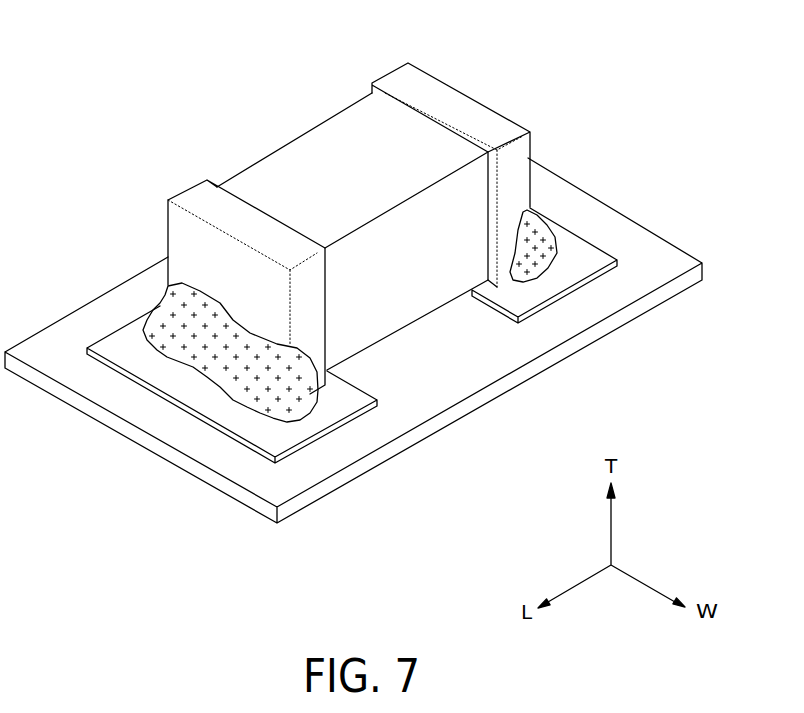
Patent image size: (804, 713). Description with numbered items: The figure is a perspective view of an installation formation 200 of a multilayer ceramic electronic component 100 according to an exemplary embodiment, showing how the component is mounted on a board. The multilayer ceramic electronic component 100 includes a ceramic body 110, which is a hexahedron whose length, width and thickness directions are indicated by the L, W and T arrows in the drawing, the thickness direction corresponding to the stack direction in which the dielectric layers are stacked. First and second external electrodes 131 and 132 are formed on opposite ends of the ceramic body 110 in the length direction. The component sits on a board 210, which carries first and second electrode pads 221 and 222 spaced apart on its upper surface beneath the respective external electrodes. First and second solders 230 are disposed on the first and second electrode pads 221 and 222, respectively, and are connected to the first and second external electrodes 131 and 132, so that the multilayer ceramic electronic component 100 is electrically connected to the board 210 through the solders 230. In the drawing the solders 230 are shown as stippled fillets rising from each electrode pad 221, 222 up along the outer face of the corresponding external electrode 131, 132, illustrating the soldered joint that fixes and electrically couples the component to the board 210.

The installation formation of multilayer ceramic electronic component 200 is at (125, 36).
The multilayer ceramic electronic component 100 is at (322, 113).
The ceramic body 110 is at (305, 157).
The first external electrode 131 is at (200, 202).
The second external electrode 132 is at (400, 85).
The board 210 is at (462, 360).
The first electrode pad 221 is at (322, 410).
The second electrode pad 222 is at (567, 270).
The first and second solders 230 is at (210, 348).